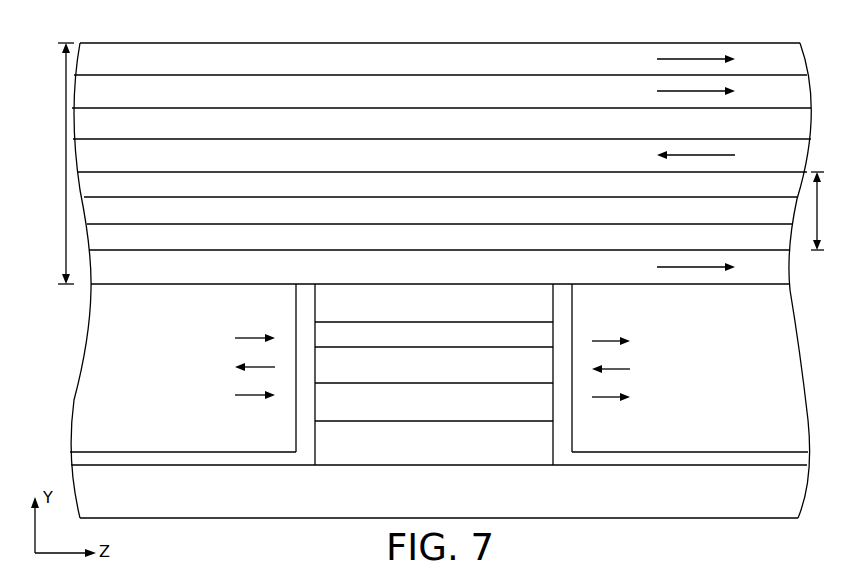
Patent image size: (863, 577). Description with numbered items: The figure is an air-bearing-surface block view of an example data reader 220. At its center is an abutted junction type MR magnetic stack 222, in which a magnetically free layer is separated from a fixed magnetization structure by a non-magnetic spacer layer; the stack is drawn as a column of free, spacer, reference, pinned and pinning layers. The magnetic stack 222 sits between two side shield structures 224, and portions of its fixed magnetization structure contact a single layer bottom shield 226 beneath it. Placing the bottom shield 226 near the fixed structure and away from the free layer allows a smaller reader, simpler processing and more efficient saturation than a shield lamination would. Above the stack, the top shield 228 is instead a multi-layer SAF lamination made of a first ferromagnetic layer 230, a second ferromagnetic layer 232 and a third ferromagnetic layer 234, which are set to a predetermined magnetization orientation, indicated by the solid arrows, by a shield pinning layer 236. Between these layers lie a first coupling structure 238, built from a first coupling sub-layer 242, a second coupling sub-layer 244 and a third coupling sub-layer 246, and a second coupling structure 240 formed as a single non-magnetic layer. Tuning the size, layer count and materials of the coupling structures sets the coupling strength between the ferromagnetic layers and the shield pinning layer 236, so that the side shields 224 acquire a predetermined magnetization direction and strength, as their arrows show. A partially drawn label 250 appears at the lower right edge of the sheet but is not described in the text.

The data reader 220 is at (100, 37).
The magnetic stack 222 is at (324, 469).
The side shield structures 224 is at (203, 448).
The bottom shield 226 is at (122, 501).
The top shield 228 is at (54, 163).
The first ferromagnetic layer 230 is at (128, 276).
The second ferromagnetic layer 232 is at (128, 163).
The third ferromagnetic layer 234 is at (128, 100).
The shield pinning layer 236 is at (128, 69).
The first coupling structure 238 is at (831, 211).
The second coupling structure 240 is at (128, 132).
The first coupling sub-layer 242 is at (128, 247).
The second coupling sub-layer 244 is at (128, 220).
The third coupling sub-layer 246 is at (128, 194).
The magnetic head 250 is at (777, 576).